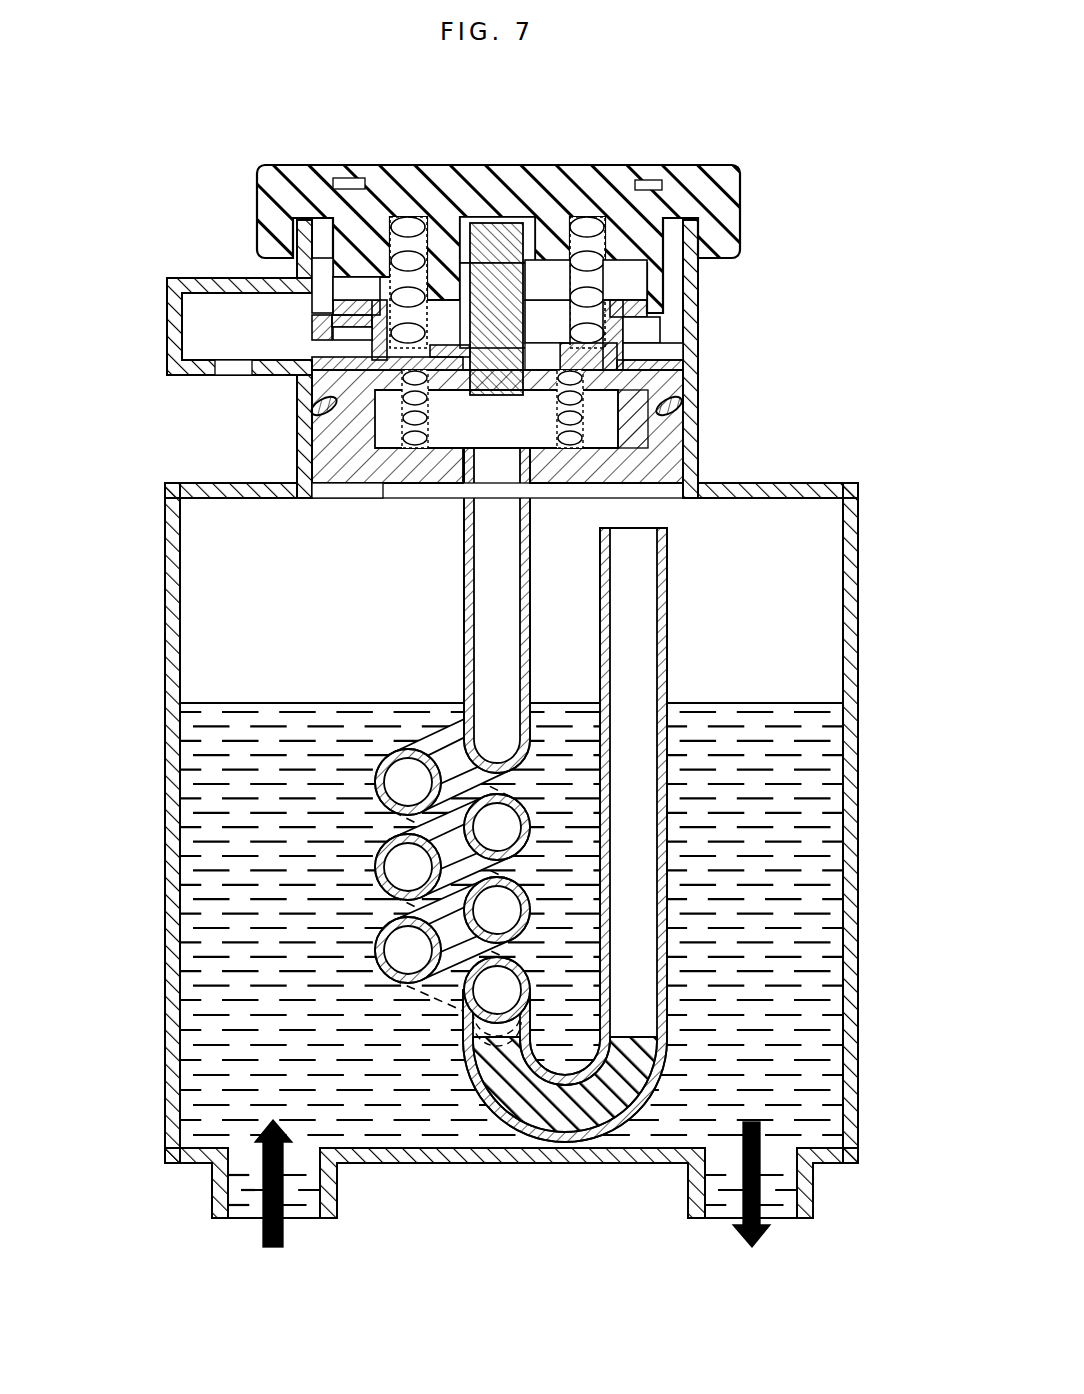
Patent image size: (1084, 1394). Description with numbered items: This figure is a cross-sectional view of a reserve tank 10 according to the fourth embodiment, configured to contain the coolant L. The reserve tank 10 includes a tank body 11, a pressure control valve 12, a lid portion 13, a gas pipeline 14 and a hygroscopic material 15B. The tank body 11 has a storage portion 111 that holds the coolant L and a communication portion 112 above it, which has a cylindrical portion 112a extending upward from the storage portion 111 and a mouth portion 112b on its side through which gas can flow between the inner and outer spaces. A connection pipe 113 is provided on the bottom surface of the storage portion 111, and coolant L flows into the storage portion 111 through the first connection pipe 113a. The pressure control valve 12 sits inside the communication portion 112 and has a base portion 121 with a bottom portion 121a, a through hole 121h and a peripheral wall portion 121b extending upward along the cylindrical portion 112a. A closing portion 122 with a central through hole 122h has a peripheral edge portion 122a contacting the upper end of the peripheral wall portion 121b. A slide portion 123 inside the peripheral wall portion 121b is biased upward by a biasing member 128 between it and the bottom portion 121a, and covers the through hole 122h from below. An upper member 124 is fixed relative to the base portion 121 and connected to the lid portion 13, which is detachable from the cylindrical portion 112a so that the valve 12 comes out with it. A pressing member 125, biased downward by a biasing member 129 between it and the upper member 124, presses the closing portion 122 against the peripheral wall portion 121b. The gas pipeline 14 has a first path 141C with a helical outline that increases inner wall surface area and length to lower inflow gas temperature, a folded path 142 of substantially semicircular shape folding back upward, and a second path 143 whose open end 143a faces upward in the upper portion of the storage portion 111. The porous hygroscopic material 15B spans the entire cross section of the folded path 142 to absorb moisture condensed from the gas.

The reserve tank 10 is at (836, 196).
The tank body 11 is at (872, 773).
The storage portion 111 is at (858, 648).
The communication portion 112 is at (703, 380).
The cylindrical portion 112a is at (698, 300).
The mouth portion 112b is at (195, 310).
The connection pipe 113 is at (803, 1190).
The first connection pipe 113a is at (212, 1189).
The pressure control valve 12 is at (334, 437).
The base portion 121 is at (776, 400).
The bottom portion 121a is at (597, 468).
The peripheral wall portion 121b is at (650, 433).
The through hole 121h is at (470, 452).
The closing portion 122 is at (700, 347).
The peripheral edge portion 122a is at (347, 358).
The through hole 122h is at (546, 356).
The slide portion 123 is at (310, 408).
The upper member 124 is at (478, 207).
The pressing member 125 is at (367, 275).
The biasing member 128 is at (293, 410).
The biasing member 129 is at (408, 222).
The lid portion 13 is at (690, 182).
The gas pipeline 14 is at (88, 765).
The first path 141C is at (367, 763).
The folded path 142 is at (477, 1093).
The second path 143 is at (600, 850).
The open end 143a is at (636, 528).
The hygroscopic material 15B is at (623, 1078).
The coolant L is at (813, 843).